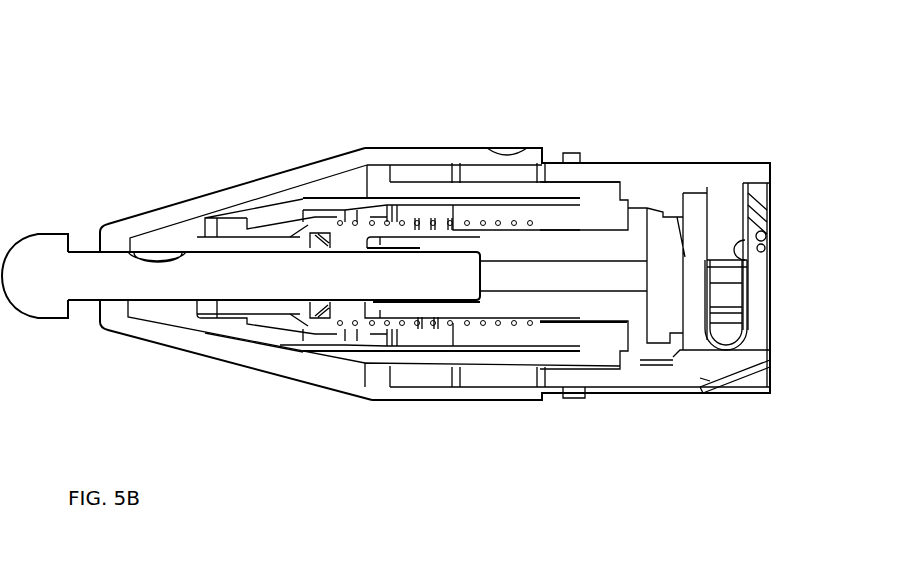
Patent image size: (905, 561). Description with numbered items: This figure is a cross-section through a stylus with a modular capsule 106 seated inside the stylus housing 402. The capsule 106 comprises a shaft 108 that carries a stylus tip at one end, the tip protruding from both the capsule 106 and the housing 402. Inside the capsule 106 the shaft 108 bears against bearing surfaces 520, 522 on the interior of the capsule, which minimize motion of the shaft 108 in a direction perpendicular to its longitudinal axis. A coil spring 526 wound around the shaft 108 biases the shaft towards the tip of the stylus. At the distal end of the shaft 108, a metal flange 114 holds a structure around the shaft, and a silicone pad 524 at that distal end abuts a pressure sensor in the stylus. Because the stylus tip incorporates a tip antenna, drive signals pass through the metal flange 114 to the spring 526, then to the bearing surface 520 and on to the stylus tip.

The capsule 106 is at (343, 188).
The shaft 108 is at (307, 285).
The metal flange 114 is at (578, 217).
The housing 402 is at (156, 215).
The bearing surface 520 is at (218, 318).
The bearing surface 522 is at (543, 323).
The silicone pad 524 is at (667, 310).
The coil spring 526 is at (690, 207).